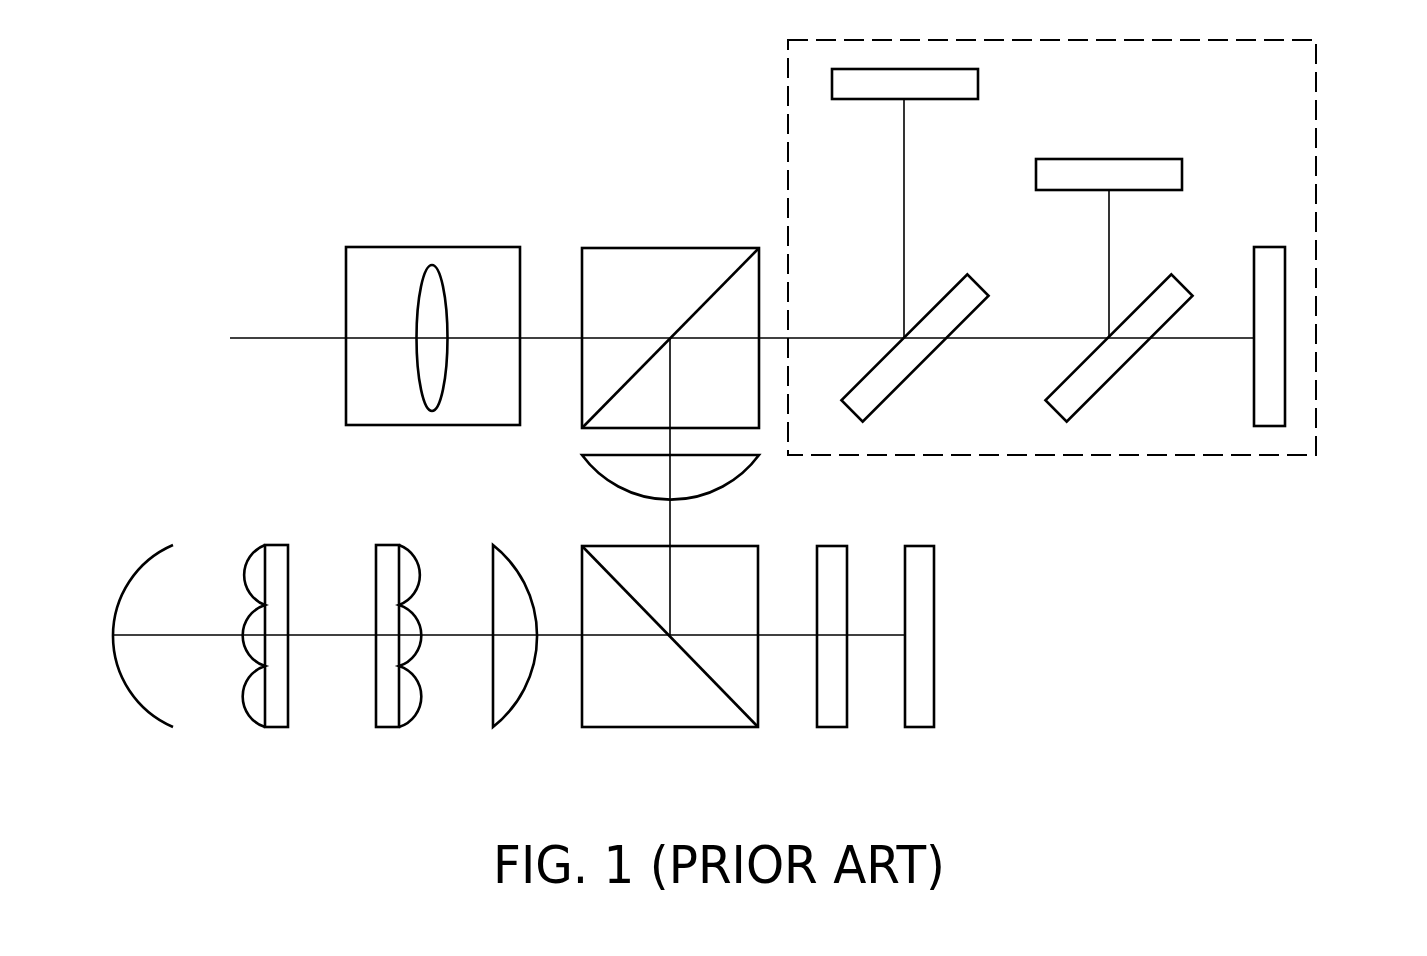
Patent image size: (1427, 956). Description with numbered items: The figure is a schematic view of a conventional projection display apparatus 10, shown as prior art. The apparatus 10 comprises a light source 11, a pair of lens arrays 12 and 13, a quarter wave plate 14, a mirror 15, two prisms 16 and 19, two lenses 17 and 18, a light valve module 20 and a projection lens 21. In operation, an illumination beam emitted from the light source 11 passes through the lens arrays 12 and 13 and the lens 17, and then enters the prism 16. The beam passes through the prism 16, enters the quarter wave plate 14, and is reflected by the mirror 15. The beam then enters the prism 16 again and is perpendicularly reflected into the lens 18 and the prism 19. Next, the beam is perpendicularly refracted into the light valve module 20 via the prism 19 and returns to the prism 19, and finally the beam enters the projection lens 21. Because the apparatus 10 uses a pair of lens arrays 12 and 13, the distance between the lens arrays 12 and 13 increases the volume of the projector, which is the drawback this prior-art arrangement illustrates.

The conventional projection display apparatus 10 is at (160, 128).
The light source 11 is at (155, 722).
The lens array 12 is at (277, 728).
The lens array 13 is at (387, 728).
The quarter wave plate 14 is at (832, 728).
The mirror 15 is at (918, 728).
The prism 16 is at (670, 728).
The lens 17 is at (493, 728).
The lens 18 is at (607, 481).
The prism 19 is at (663, 247).
The light valve module 20 is at (1318, 142).
The projection lens 21 is at (434, 247).